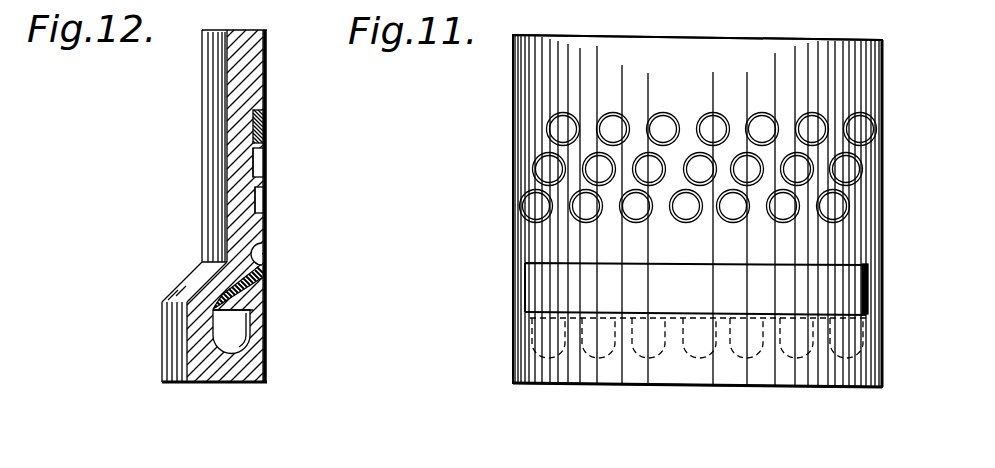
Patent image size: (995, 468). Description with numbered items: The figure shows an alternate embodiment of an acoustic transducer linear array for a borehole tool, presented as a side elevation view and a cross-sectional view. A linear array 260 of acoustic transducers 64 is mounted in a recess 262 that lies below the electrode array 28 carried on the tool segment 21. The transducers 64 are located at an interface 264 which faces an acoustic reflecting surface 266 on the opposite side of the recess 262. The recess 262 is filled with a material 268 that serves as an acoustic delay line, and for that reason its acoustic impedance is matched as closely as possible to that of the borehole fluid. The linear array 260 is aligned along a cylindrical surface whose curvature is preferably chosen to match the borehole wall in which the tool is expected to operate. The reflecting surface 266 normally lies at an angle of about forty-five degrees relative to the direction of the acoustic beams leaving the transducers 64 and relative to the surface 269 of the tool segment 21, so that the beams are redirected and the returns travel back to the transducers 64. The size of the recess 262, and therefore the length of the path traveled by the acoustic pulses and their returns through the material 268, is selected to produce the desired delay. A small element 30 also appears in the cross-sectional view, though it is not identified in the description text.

In FIG. 11, the panel 21 is at (498, 90).
In FIG. 12, the wall 28 is at (275, 175).
In FIG. 11, the wall 28 is at (518, 173).
In FIG. 12, the fastener 30 is at (263, 128).
In FIG. 12, the channel 64 is at (237, 343).
In FIG. 11, the channel 64 is at (516, 361).
In FIG. 11, the recesses 260 is at (631, 371).
In FIG. 11, the bar 262 is at (545, 282).
In FIG. 11, the ledge 264 is at (548, 310).
In FIG. 12, the bead 266 is at (265, 233).
In FIG. 12, the seal strip 268 is at (267, 290).
In FIG. 12, the side wall 269 is at (268, 60).